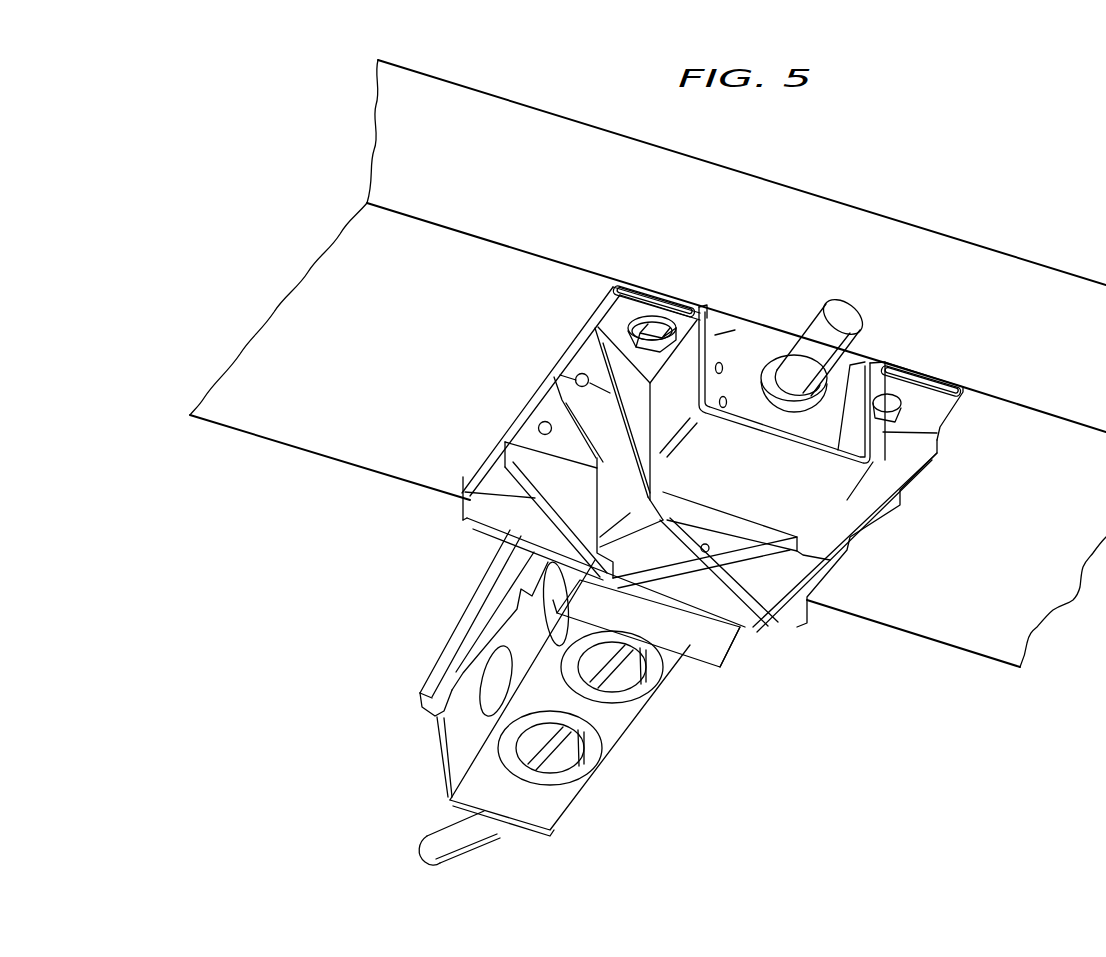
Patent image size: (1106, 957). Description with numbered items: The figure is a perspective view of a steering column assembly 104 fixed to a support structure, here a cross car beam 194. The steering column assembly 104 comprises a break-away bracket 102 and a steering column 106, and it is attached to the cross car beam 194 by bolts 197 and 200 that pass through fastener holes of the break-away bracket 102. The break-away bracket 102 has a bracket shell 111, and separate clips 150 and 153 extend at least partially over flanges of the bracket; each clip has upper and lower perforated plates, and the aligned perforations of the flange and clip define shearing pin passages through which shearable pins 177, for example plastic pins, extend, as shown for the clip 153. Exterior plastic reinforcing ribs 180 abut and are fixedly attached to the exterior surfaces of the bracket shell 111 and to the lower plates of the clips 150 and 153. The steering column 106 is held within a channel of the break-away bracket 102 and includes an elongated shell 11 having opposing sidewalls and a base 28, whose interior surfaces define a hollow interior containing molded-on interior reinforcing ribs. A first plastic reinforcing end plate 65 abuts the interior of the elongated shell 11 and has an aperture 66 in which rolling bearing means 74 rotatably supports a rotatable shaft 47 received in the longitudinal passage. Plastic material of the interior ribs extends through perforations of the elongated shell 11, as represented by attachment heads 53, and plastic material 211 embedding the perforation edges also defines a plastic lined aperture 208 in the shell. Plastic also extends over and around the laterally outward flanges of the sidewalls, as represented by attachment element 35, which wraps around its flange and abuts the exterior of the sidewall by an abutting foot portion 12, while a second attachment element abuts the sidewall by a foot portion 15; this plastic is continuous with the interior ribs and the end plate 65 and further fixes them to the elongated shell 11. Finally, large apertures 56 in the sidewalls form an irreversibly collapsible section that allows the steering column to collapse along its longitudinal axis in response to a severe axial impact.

The cross car beam 194 is at (983, 255).
The clip 150 is at (855, 538).
The exterior plastic reinforcing ribs 180 is at (483, 535).
The clip 153 is at (540, 383).
The shearable pins 177 is at (537, 429).
The bolt 200 is at (635, 327).
The first plastic reinforcing end plate 65 is at (740, 325).
The abutting foot portion 15 is at (718, 350).
The attachment heads 53 is at (719, 400).
The rotatable shaft 47 is at (808, 326).
The aperture 66 is at (772, 402).
The rolling bearing means 74 is at (800, 400).
The bolt 197 is at (887, 415).
The break-away bracket 102 is at (818, 630).
The bracket shell 111 is at (720, 672).
The elongated shell 11 is at (617, 747).
The base 28 is at (620, 727).
The plastic material 211 is at (580, 773).
The plastic lined aperture 208 is at (540, 747).
The steering column 106 is at (595, 793).
The abutting foot portion 12 is at (520, 606).
The large apertures 56 is at (542, 626).
The attachment element 35 is at (420, 693).
The steering column assembly 104 is at (300, 698).